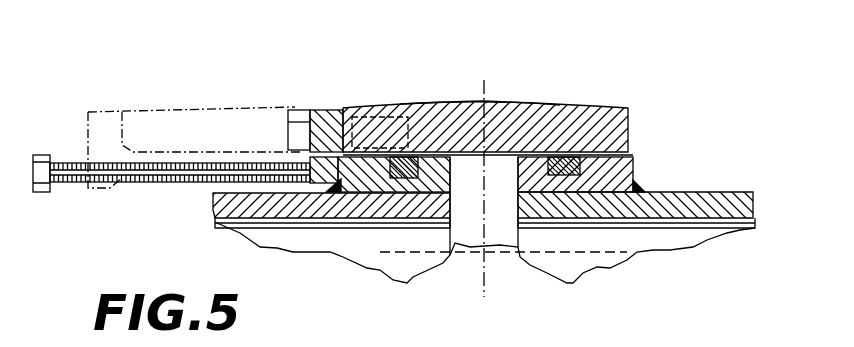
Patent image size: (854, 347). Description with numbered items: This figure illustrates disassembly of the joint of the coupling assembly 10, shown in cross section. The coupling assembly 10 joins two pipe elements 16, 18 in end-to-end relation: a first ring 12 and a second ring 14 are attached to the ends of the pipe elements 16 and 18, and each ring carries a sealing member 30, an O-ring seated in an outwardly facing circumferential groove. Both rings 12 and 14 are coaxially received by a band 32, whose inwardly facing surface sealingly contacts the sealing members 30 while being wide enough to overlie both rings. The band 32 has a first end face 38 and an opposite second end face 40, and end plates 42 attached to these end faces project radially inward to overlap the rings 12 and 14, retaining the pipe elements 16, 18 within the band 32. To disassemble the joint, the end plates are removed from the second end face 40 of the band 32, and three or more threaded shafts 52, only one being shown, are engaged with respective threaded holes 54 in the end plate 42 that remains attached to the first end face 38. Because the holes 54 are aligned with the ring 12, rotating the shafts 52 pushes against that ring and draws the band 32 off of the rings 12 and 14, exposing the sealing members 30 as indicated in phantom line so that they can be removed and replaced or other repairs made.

The coupling assembly 10 is at (610, 70).
The first ring 12 is at (343, 188).
The second ring 14 is at (621, 200).
The pipe element 16 is at (213, 208).
The pipe element 18 is at (753, 202).
The sealing member 30 is at (397, 155).
The band 32 is at (502, 103).
The first end face 38 is at (343, 152).
The second end face 40 is at (628, 117).
The end plate 42 is at (296, 111).
The threaded shaft 52 is at (73, 183).
The threaded hole 54 is at (330, 186).